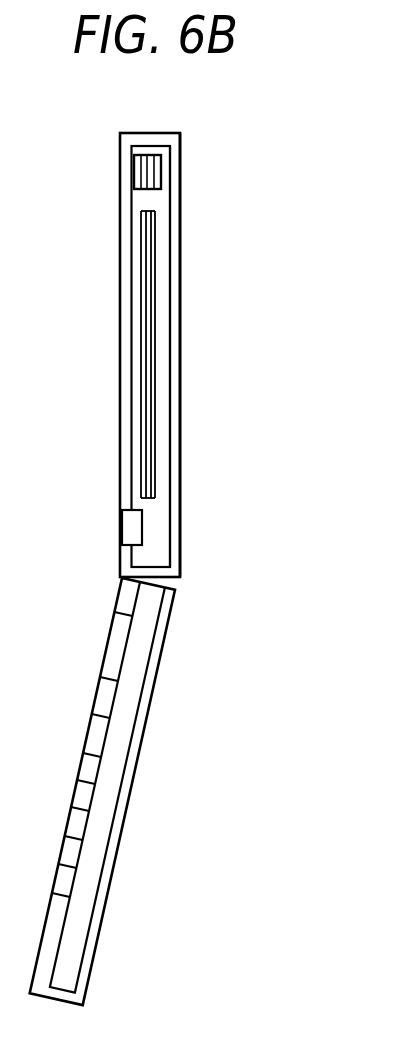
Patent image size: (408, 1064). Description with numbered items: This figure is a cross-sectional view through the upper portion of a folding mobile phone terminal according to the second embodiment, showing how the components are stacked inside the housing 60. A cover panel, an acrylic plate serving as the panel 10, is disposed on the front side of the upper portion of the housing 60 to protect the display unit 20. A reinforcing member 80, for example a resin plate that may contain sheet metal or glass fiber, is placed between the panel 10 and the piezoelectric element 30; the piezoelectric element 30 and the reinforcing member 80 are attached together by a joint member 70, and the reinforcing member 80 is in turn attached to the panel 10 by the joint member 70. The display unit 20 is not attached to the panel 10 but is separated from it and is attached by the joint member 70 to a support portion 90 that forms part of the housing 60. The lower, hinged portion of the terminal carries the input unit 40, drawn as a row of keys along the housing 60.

The panel 10 is at (121, 208).
The display unit 20 is at (143, 330).
The piezoelectric element 30 is at (155, 170).
The input unit 40 is at (125, 528).
The housing 60 is at (176, 202).
The joint member 70 is at (141, 155).
The reinforcing member 80 is at (133, 178).
The support portion 90 is at (163, 262).